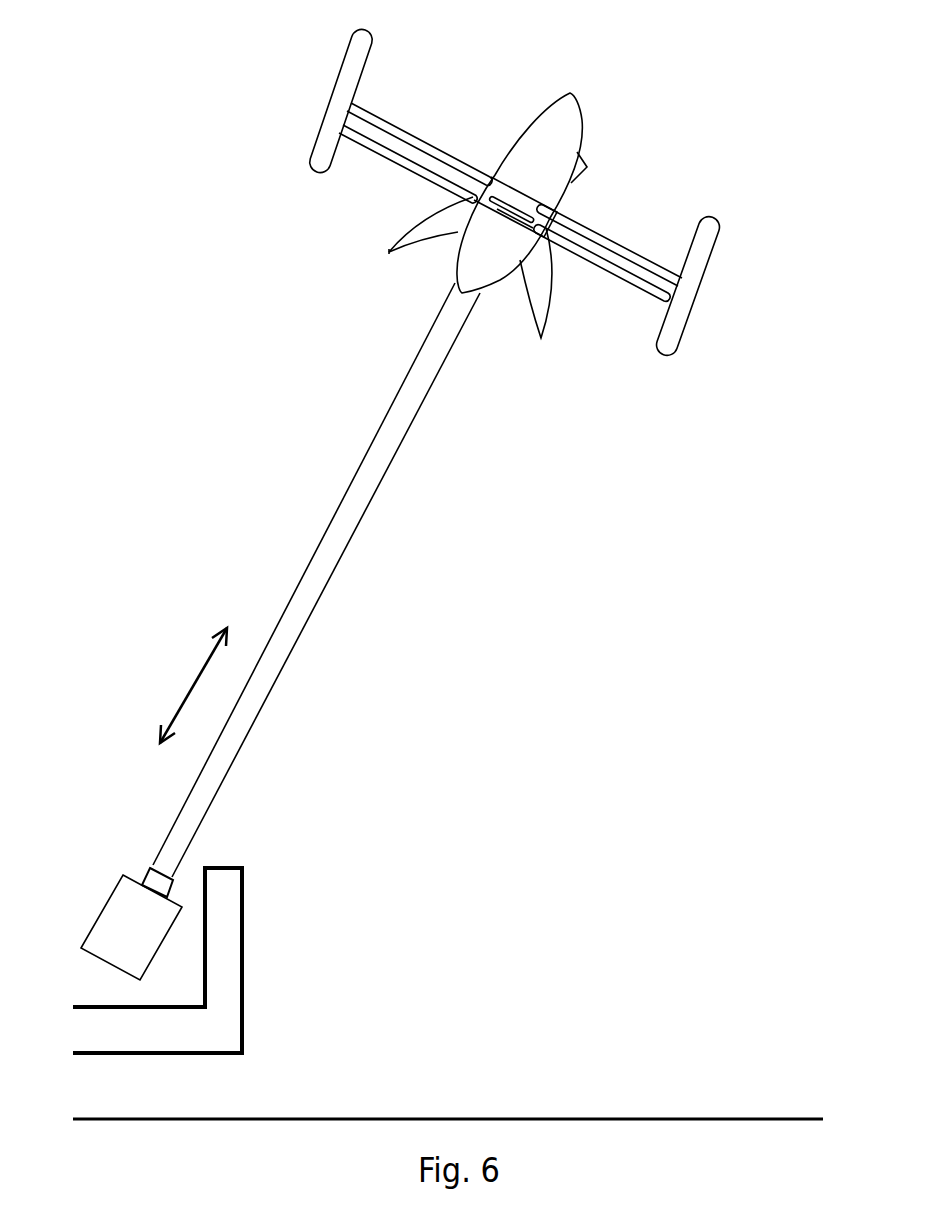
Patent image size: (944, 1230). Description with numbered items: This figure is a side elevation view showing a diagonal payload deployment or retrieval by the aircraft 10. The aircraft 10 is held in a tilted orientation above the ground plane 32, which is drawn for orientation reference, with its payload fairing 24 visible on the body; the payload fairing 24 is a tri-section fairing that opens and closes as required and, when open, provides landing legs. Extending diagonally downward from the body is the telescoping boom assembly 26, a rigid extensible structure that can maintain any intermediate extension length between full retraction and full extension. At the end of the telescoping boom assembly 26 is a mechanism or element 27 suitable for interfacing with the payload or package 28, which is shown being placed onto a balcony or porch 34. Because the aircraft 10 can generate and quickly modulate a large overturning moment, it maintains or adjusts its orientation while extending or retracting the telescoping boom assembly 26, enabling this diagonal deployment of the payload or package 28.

The aircraft 10 is at (514, 193).
The payload fairing 24 is at (389, 251).
The telescoping boom assembly 26 is at (356, 520).
The mechanism or element 27 is at (176, 877).
The payload or package 28 is at (101, 913).
The ground plane 32 is at (655, 1118).
The balcony or porch 34 is at (272, 936).